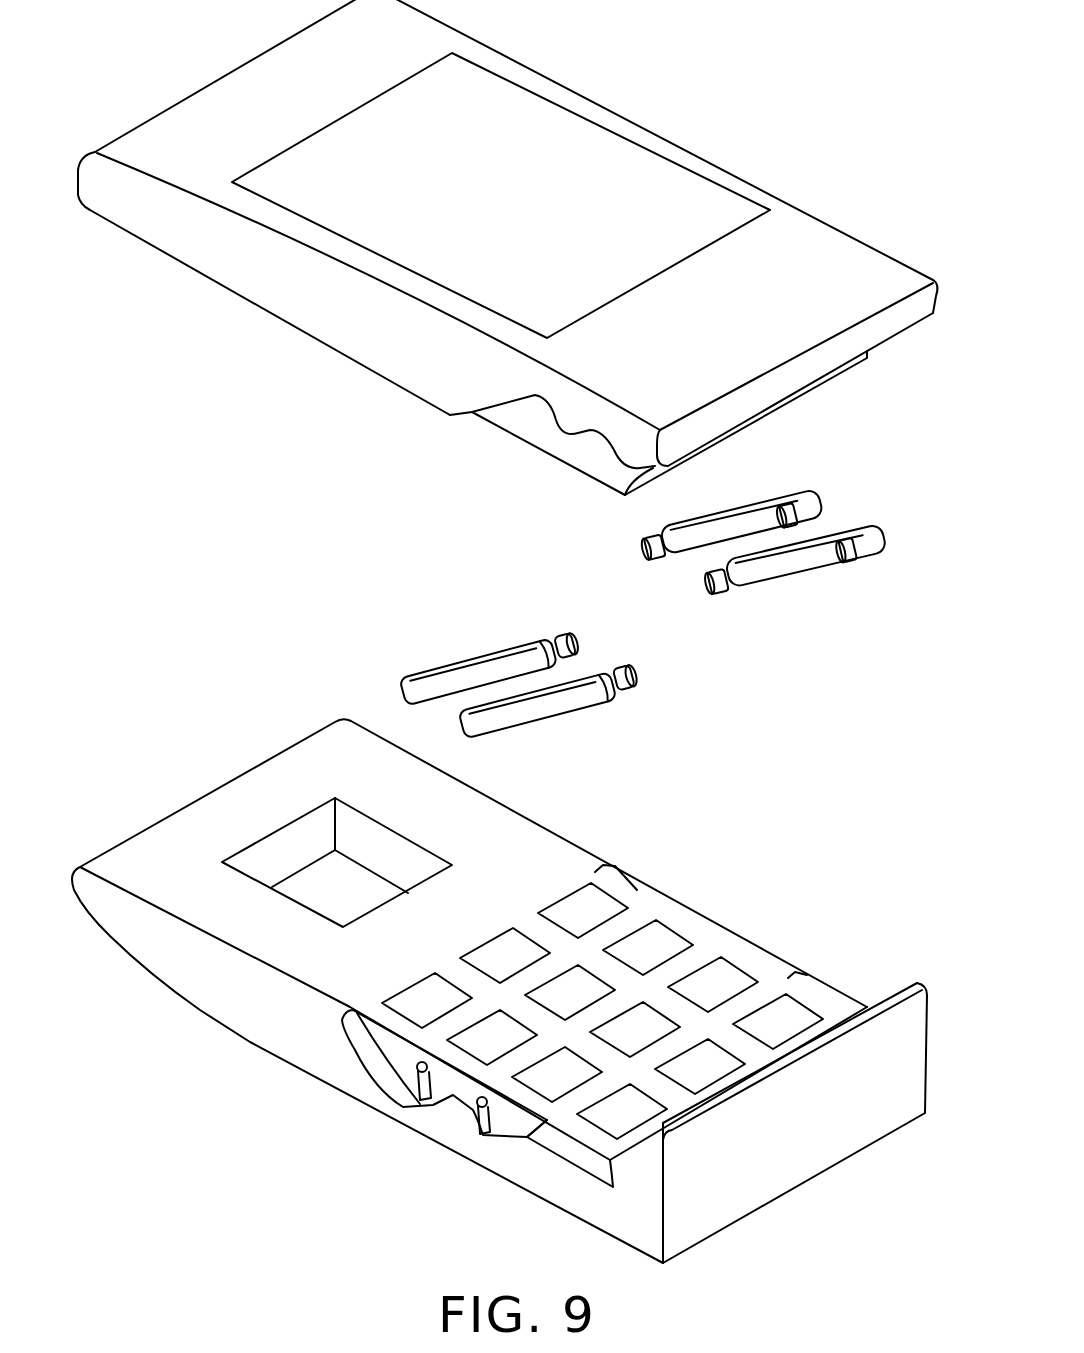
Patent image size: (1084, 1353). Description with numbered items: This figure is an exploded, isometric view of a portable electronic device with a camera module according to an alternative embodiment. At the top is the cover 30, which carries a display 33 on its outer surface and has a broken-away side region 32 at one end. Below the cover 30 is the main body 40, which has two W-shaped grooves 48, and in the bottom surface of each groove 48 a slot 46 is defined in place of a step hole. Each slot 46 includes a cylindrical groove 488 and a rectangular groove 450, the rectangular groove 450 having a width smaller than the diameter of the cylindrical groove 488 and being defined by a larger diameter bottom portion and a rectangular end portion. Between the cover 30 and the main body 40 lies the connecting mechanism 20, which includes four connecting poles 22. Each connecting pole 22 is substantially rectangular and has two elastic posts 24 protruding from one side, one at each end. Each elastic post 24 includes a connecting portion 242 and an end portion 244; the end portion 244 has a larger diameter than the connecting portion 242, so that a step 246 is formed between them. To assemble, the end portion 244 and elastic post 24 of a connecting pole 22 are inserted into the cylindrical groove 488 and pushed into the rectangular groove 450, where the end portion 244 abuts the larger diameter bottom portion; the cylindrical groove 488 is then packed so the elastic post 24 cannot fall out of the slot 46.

The cover 30 is at (625, 98).
The display 33 is at (698, 208).
The side wall of upper cover 32 is at (645, 477).
The connecting pole 22 is at (880, 537).
The connecting portion 242 is at (860, 555).
The end portion 244 is at (835, 557).
The step 246 is at (787, 497).
The elastic post 24 is at (563, 633).
The connecting mechanism 20 is at (620, 703).
The main body 40 is at (215, 1030).
The slot 46 is at (309, 1186).
The W-shaped groove 48 is at (457, 1117).
The rectangular groove 450 is at (423, 1103).
The cylindrical groove 488 is at (420, 1090).